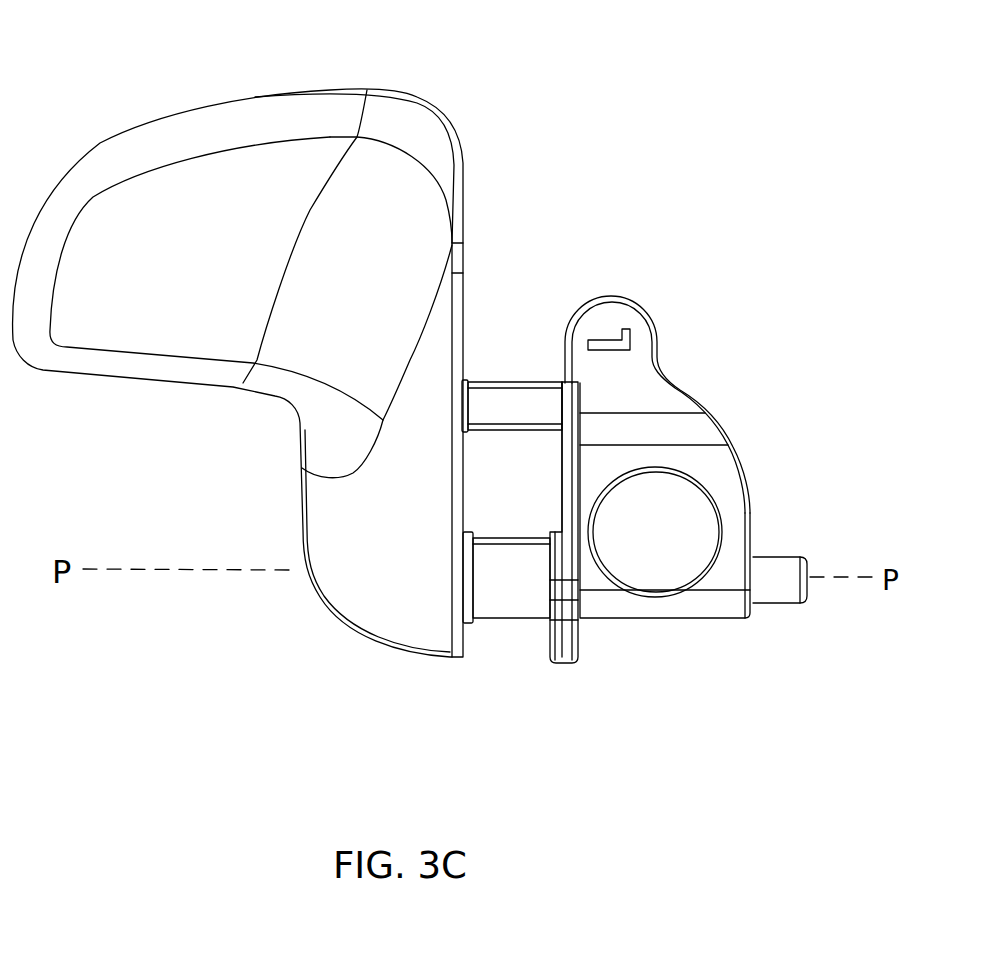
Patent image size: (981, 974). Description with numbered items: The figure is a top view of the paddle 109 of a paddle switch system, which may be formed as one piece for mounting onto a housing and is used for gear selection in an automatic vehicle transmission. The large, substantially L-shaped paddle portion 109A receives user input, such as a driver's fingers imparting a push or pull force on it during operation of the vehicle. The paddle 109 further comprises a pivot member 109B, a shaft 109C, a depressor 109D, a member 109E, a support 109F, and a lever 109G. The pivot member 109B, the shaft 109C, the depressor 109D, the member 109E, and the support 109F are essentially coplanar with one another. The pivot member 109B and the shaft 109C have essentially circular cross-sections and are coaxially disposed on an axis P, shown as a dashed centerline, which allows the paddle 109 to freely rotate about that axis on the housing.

The paddle 109 is at (430, 400).
The substantially L-shaped paddle portion 109A is at (350, 87).
The pivot member 109B is at (500, 620).
The shaft 109C is at (783, 557).
The depressor 109D is at (680, 298).
The member 109E is at (697, 620).
The support 109F is at (508, 380).
The lever 109G is at (582, 623).